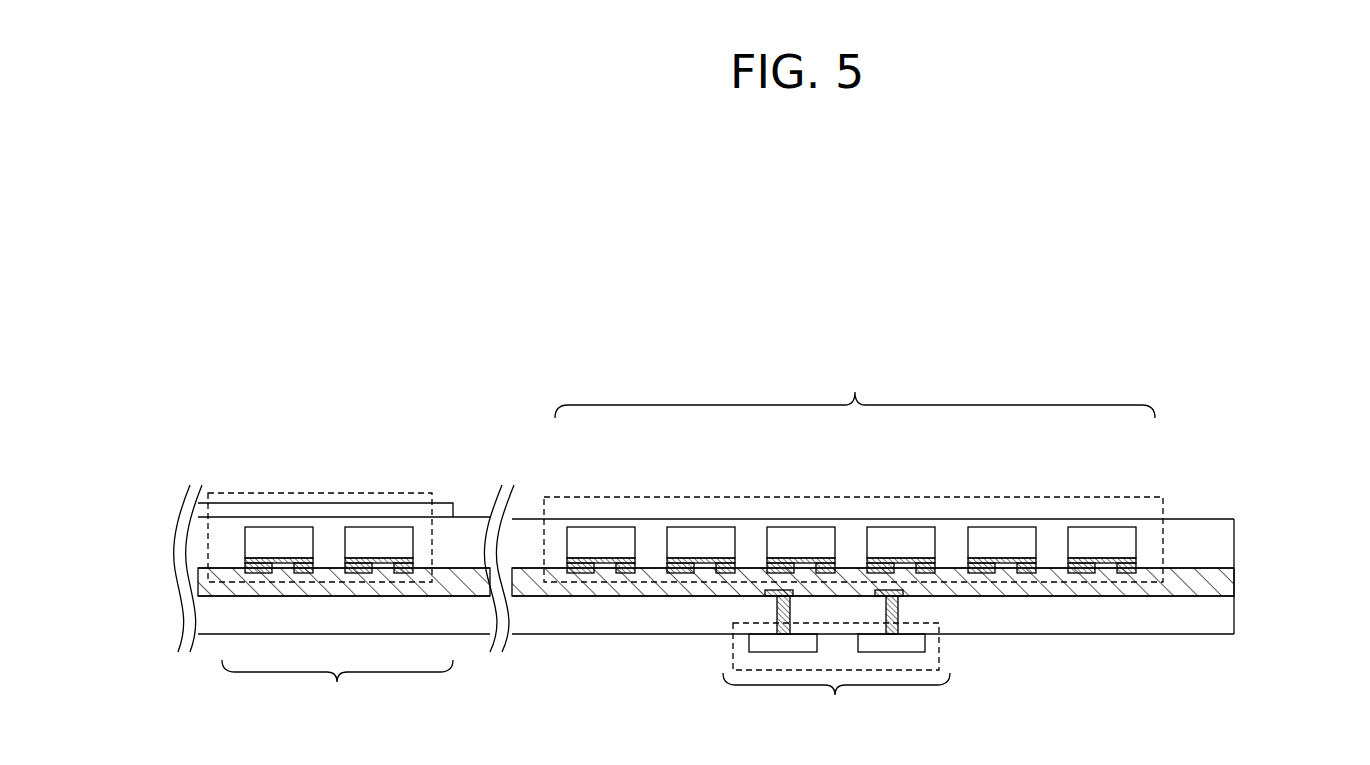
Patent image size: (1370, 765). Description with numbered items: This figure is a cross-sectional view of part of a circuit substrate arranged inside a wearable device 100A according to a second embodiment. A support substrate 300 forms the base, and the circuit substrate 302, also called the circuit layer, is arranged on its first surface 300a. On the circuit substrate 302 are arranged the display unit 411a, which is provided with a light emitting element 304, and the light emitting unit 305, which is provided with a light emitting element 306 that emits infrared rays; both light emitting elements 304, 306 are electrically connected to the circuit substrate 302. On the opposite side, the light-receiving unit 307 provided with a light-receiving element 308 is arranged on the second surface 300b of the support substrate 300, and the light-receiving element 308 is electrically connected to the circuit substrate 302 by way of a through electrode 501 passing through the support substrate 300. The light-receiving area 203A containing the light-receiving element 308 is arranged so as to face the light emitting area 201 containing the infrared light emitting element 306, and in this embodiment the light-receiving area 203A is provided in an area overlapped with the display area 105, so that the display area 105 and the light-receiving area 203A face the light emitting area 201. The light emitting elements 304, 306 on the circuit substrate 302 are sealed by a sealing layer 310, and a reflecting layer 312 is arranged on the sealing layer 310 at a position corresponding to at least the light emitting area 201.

The wearable device 100A is at (232, 182).
The display area 105 is at (853, 471).
The light emitting area 201 is at (337, 622).
The light-receiving area 203A is at (836, 683).
The support substrate 300 is at (670, 634).
The first surface 300a is at (1212, 603).
The second surface 300b is at (1212, 638).
The circuit substrate 302 is at (1237, 583).
The light emitting element 304 is at (901, 527).
The light emitting unit 305 is at (332, 492).
The light emitting element 306 is at (378, 527).
The light-receiving unit 307 is at (905, 670).
The light-receiving element 308 is at (760, 652).
The sealing layer 310 is at (1237, 543).
The reflecting layer 312 is at (285, 502).
The display unit 411a is at (1052, 497).
The through electrode 501 is at (900, 618).